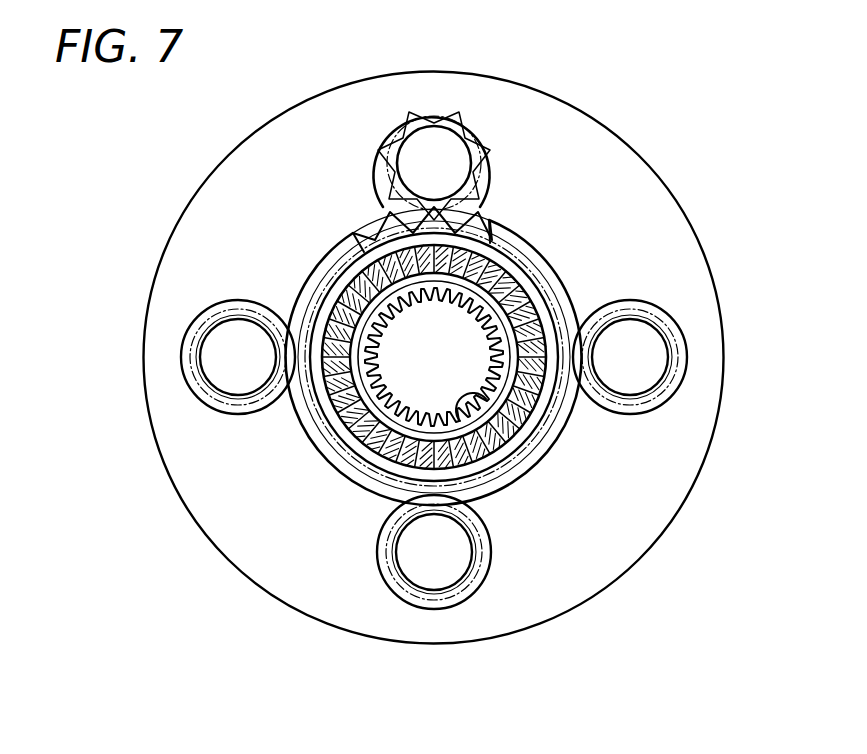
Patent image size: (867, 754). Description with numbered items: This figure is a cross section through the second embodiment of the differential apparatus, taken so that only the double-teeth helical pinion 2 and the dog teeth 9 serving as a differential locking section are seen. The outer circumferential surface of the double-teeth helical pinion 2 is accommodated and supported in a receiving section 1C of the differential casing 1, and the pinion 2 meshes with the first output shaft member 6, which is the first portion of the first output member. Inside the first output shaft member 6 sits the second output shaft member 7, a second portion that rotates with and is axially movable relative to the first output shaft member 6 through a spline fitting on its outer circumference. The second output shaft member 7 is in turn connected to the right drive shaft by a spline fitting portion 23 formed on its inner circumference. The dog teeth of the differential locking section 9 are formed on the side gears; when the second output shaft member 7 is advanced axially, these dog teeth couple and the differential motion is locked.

The differential casing 1 is at (627, 180).
The receiving section 1C is at (420, 110).
The double-teeth helical pinion 2 is at (452, 153).
The first output shaft member 6 is at (523, 278).
The second output shaft member 7 is at (535, 318).
The differential locking section 9 is at (515, 425).
The spline fitting portion 23 is at (465, 420).